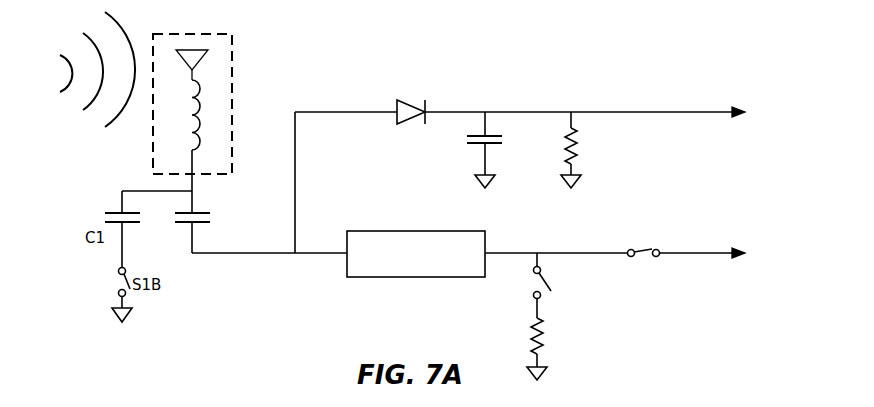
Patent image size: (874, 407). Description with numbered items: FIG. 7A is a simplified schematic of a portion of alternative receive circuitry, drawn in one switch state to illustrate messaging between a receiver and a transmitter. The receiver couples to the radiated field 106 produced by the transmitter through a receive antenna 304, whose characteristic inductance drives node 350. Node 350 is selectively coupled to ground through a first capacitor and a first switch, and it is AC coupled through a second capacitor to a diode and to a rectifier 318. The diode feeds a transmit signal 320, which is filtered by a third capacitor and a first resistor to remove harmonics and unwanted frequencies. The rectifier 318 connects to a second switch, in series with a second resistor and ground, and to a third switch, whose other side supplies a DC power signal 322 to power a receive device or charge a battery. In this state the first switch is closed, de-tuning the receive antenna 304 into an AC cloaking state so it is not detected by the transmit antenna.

The radiated field 106 is at (87, 130).
The receive antenna 304 is at (232, 57).
The node 350 is at (192, 200).
The rectifier 318 is at (373, 231).
The transmit signal 320 is at (658, 112).
The DC power signal 322 is at (685, 253).